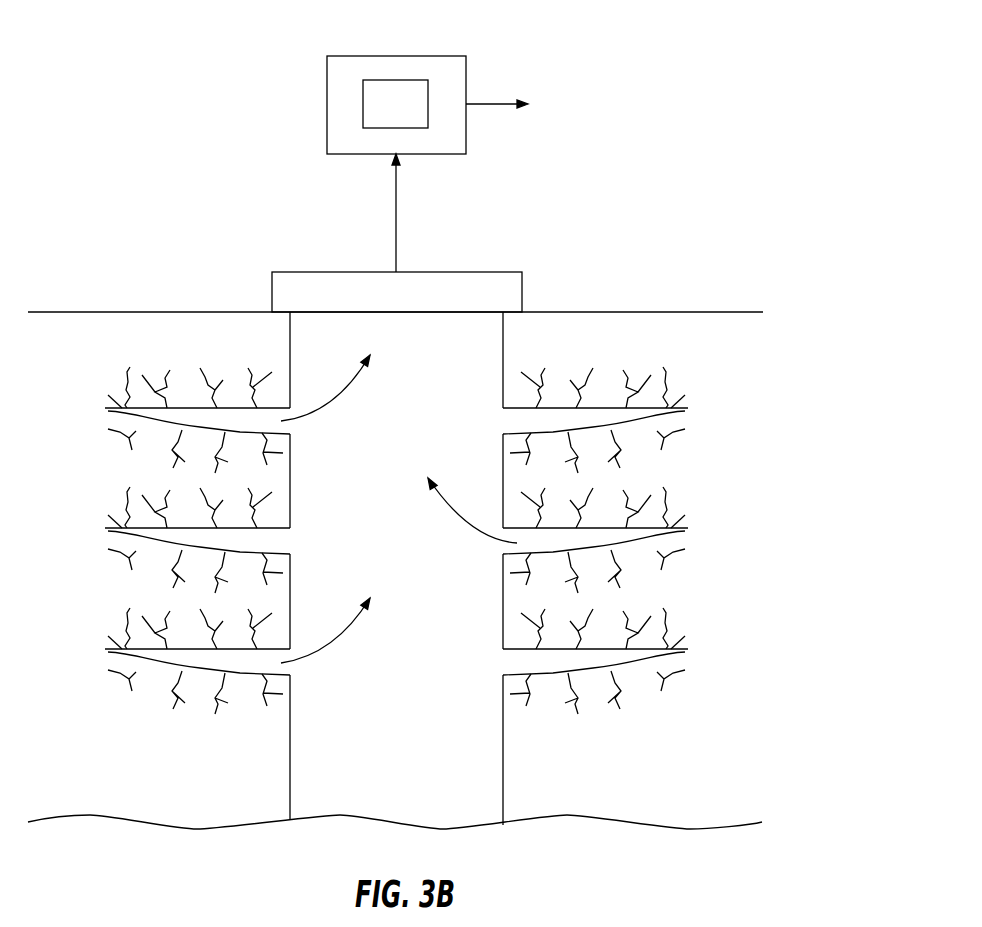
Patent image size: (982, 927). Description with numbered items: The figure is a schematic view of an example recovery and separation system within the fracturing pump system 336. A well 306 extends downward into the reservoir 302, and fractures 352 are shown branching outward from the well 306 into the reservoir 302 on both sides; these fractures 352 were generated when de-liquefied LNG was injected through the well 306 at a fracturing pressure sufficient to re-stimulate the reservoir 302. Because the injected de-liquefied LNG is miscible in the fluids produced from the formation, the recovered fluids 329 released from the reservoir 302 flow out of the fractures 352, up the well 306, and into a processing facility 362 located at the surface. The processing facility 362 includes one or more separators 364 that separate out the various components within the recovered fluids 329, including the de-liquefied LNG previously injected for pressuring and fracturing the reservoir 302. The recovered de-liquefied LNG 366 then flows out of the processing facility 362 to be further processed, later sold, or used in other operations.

The reservoir volume 302 is at (800, 428).
The well 306 is at (450, 345).
The recovered fluids 329 is at (398, 230).
The fracturing pump system 336 is at (588, 48).
The fractures 352 is at (283, 716).
The processing facility 362 is at (397, 56).
The separator 364 is at (420, 117).
The recovered de-liquefied LNG 366 is at (497, 105).